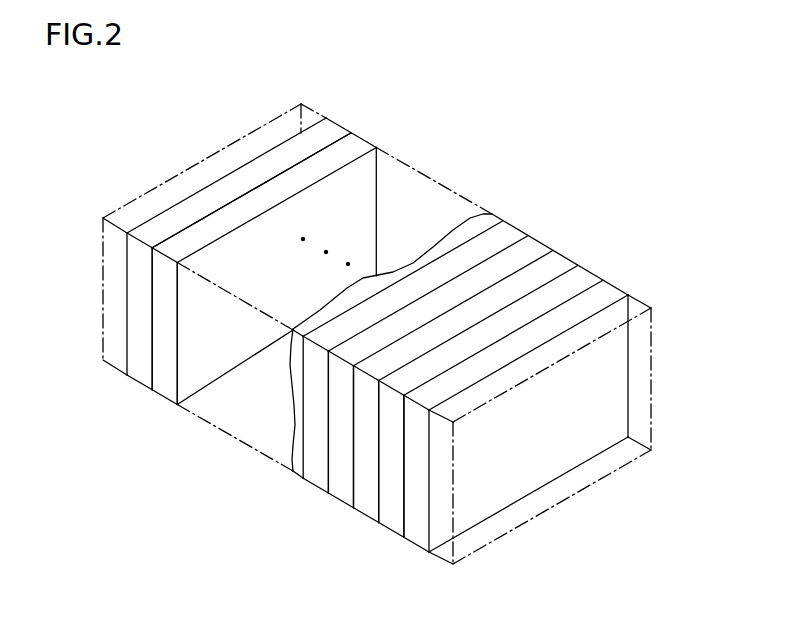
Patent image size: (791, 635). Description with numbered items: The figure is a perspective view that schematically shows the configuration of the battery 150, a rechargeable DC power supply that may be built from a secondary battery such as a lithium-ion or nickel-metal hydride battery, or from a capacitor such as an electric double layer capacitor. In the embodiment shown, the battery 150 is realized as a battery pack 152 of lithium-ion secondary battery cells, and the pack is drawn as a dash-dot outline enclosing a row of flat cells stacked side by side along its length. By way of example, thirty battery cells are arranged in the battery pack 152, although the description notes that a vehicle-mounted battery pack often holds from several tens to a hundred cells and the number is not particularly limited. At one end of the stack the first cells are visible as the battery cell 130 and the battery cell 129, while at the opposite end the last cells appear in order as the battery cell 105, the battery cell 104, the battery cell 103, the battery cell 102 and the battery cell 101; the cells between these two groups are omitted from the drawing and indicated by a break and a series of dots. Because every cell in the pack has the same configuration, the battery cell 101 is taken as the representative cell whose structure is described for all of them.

The battery 150 is at (354, 331).
The battery pack 152 is at (440, 180).
The battery cell 130 is at (140, 373).
The battery cell 129 is at (168, 388).
The battery cell 105 is at (315, 475).
The battery cell 104 is at (343, 488).
The battery cell 103 is at (370, 500).
The battery cell 102 is at (395, 515).
The battery cell 101 is at (420, 530).